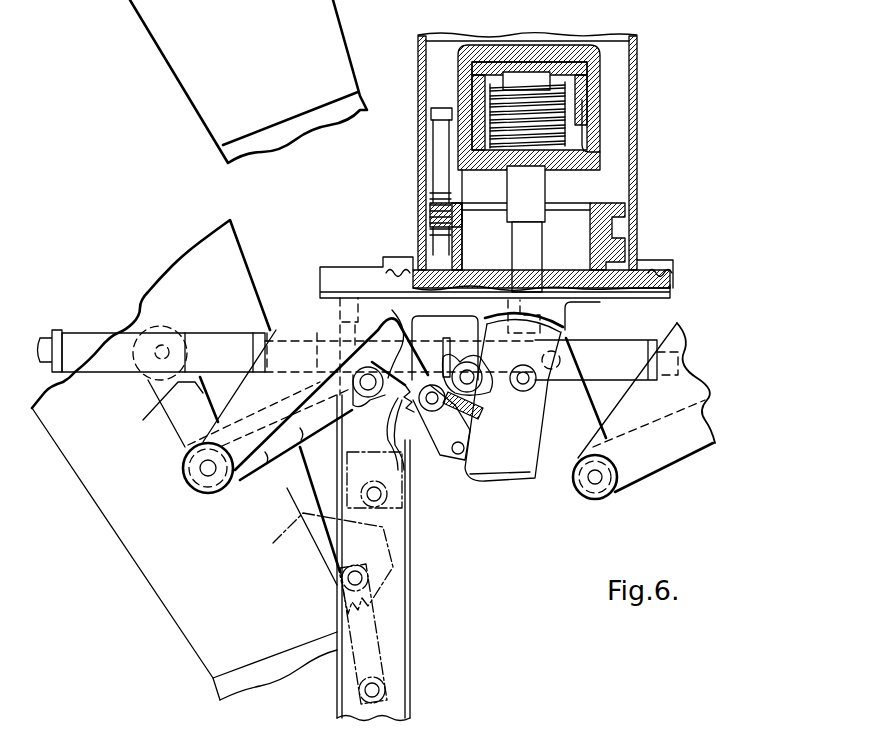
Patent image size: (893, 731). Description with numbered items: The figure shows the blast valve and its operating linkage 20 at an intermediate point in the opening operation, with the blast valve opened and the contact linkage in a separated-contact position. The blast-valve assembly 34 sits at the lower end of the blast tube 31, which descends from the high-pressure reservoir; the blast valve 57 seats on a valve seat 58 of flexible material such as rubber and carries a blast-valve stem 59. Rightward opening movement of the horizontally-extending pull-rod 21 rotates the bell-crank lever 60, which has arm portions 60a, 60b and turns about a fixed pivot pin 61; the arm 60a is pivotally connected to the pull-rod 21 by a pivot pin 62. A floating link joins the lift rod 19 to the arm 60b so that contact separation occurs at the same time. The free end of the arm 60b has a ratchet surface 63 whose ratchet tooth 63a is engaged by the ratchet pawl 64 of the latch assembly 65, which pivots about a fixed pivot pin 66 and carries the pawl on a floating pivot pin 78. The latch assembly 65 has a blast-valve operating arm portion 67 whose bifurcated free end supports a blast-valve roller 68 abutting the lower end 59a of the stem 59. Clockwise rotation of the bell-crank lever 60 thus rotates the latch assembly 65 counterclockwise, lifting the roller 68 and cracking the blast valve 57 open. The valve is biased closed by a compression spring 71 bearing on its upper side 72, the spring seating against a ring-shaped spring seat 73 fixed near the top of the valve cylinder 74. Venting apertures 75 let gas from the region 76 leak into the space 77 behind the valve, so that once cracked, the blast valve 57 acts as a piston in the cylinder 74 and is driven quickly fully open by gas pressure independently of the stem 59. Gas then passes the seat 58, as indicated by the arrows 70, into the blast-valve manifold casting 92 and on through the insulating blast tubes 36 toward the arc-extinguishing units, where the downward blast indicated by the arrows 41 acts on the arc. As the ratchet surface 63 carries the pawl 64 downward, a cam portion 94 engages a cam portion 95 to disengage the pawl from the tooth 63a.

The lift rod 19 is at (410, 574).
The operating linkage 20 is at (441, 465).
The pull-rod 21 is at (90, 332).
The blast tube 31 is at (638, 85).
The blast-valve assembly 34 is at (336, 457).
The insulating blast tube 36 is at (548, 466).
The arrows 41 is at (506, 510).
The blast valve 57 is at (433, 176).
The valve seat 58 is at (593, 207).
The blast-valve stem 59 is at (545, 250).
The lower end of blast-valve stem 59a is at (566, 318).
The bell-crank lever 60 is at (286, 488).
The bell-crank lever arm 60a is at (183, 441).
The bell-crank lever arm 60b is at (283, 442).
The fixed pivot pin 61 is at (202, 475).
The pivot pin 62 is at (170, 345).
The ratchet surface 63 is at (379, 375).
The ratchet tooth 63a is at (401, 470).
The ratchet pawl 64 is at (435, 388).
The latch assembly 65 is at (455, 432).
The fixed pivot pin 66 is at (470, 370).
The blast-valve operating arm portion 67 is at (513, 402).
The blast-valve roller 68 is at (635, 407).
The arrows 70 is at (610, 168).
The compression spring 71 is at (575, 113).
The upper side of blast valve 72 is at (588, 139).
The ring-shaped spring seat 73 is at (482, 75).
The valve cylinder 74 is at (586, 58).
The venting apertures 75 is at (482, 222).
The region 76 is at (565, 222).
The space 77 is at (472, 83).
The floating pivot pin 78 is at (464, 452).
The blast-valve manifold casting 92 is at (593, 262).
The cam portion 94 is at (414, 356).
The cam portion 95 is at (383, 336).